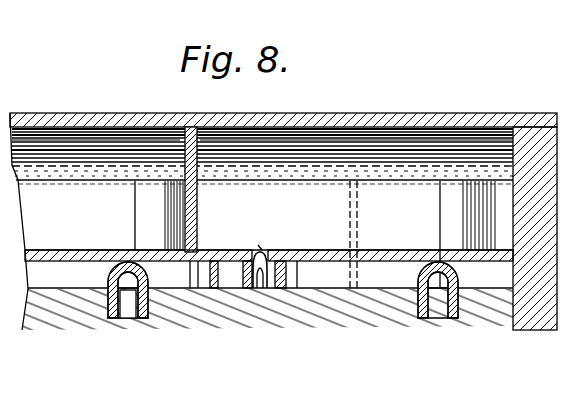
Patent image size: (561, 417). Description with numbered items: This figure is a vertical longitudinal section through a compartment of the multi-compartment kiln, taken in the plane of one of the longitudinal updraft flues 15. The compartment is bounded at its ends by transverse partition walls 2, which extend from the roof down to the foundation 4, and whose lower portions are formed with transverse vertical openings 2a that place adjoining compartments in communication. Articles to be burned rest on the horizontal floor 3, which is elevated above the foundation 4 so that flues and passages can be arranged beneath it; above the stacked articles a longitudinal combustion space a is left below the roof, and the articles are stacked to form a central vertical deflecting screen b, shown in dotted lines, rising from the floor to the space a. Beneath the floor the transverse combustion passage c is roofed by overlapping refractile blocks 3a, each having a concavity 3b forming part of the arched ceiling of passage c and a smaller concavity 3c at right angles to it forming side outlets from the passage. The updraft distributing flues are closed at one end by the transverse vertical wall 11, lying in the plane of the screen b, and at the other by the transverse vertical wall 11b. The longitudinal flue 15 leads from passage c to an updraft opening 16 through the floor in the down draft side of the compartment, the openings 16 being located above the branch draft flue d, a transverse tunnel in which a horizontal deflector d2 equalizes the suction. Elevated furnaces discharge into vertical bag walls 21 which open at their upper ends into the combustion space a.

The transverse partition wall 2 is at (199, 156).
The transverse vertical opening 2a is at (197, 251).
The horizontal floor 3 is at (43, 255).
The refractile material block 3a is at (258, 245).
The concavity 3b is at (252, 272).
The concavity 3c is at (271, 273).
The foundation 4 is at (165, 285).
The transverse vertical wall 11 is at (352, 272).
The transverse vertical wall 11b is at (214, 285).
The longitudinal updraft flue 15 is at (345, 286).
The updraft opening 16 is at (127, 252).
The bag wall 21 is at (142, 203).
The combustion space a is at (262, 148).
The deflecting screen b is at (354, 189).
The combustion passage c is at (259, 286).
The branch draft flue d is at (128, 307).
The horizontal longitudinal deflector d2 is at (432, 267).